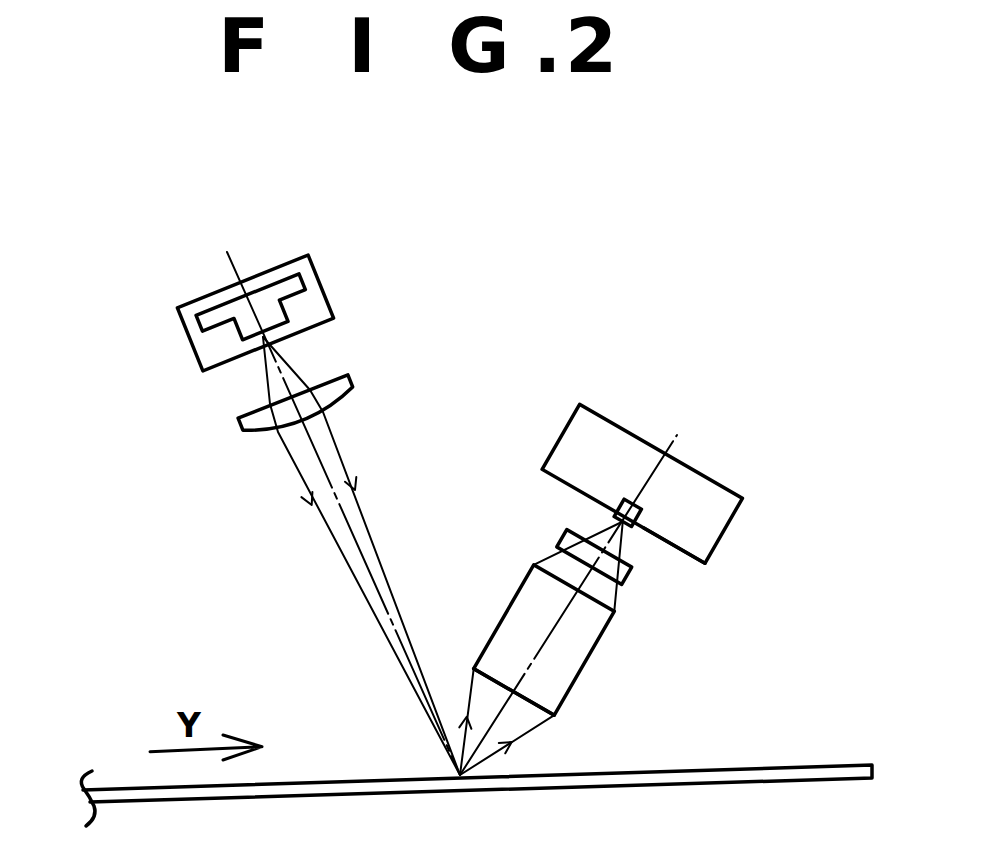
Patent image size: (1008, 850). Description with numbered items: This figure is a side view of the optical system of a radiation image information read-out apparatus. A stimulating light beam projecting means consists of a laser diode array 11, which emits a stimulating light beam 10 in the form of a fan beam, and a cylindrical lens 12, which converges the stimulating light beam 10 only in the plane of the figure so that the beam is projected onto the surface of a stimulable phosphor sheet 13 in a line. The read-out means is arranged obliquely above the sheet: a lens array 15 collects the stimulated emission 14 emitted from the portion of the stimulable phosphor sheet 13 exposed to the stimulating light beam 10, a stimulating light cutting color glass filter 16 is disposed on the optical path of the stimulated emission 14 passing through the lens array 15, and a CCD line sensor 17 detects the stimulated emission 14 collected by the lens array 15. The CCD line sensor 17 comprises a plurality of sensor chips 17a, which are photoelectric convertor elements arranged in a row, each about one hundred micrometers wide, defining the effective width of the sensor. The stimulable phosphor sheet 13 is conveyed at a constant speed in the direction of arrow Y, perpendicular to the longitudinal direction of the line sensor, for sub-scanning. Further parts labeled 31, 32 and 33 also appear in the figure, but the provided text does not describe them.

The stimulating light beam 10 is at (303, 372).
The laser diode array 11 is at (323, 288).
The cylindrical lens 12 is at (357, 381).
The stimulable phosphor sheet 13 is at (802, 765).
The stimulated emission 14 is at (516, 697).
The lens array 15 is at (597, 647).
The stimulating light cutting color glass filter 16 is at (604, 623).
The CCD line sensor 17 is at (642, 482).
The sensor chip 17a is at (621, 500).
The reflected light beam 31 is at (533, 708).
The aperture member 32 is at (620, 598).
The light receiving surface 33 is at (665, 548).